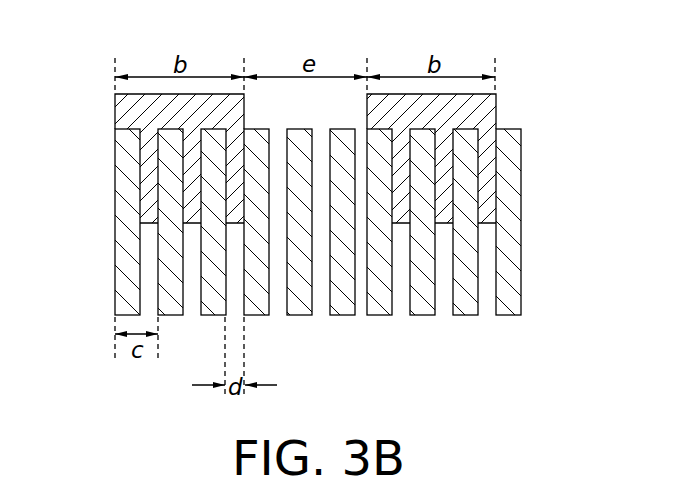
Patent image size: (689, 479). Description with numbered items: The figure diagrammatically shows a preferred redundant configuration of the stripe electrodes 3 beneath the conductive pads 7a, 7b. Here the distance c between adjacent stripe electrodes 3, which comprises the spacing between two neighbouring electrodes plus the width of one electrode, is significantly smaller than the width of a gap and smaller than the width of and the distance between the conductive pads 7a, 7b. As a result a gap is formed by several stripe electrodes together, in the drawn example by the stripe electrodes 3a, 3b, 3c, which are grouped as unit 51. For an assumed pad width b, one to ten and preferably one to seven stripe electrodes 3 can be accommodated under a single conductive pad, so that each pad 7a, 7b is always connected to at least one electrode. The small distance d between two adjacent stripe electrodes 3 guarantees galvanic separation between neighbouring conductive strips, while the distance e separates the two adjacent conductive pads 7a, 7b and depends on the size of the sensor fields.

The stripe electrode 3 is at (253, 313).
The stripe electrode 3a is at (120, 290).
The stripe electrode 3b is at (173, 313).
The stripe electrode 3c is at (206, 247).
The conductive pad 7a is at (118, 112).
The conductive pad 7b is at (497, 112).
The electrode group 51 is at (141, 289).